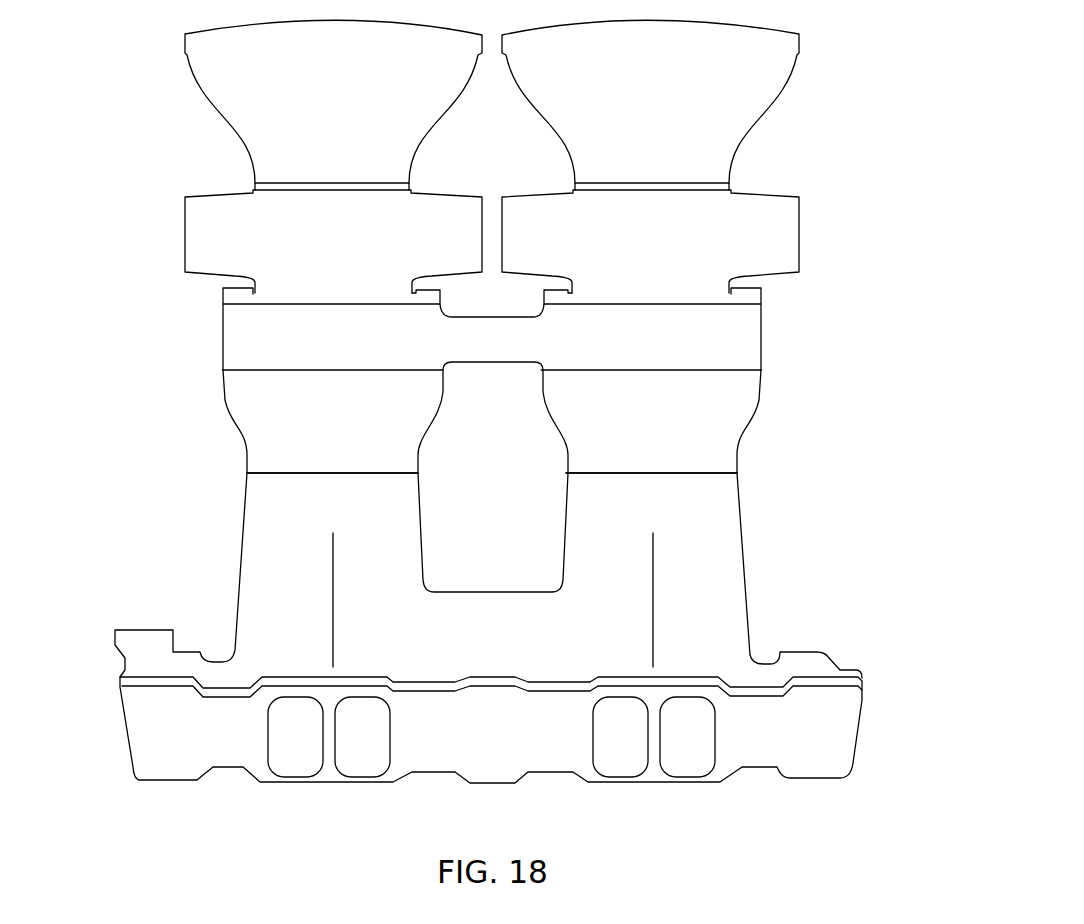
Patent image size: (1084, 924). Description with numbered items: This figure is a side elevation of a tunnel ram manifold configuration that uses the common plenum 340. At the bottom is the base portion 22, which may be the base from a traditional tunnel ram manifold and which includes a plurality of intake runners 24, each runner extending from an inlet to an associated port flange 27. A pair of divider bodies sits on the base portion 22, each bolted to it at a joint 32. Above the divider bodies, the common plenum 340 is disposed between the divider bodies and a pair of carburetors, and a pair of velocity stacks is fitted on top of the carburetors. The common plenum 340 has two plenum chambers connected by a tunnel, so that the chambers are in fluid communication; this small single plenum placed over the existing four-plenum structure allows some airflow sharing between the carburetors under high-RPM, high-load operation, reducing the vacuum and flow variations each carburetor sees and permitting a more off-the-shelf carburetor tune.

The common plenum 340 is at (762, 340).
The joint 32 is at (247, 505).
The intake runner 24 is at (285, 557).
The base portion 22 is at (802, 647).
The port flange 27 is at (813, 740).